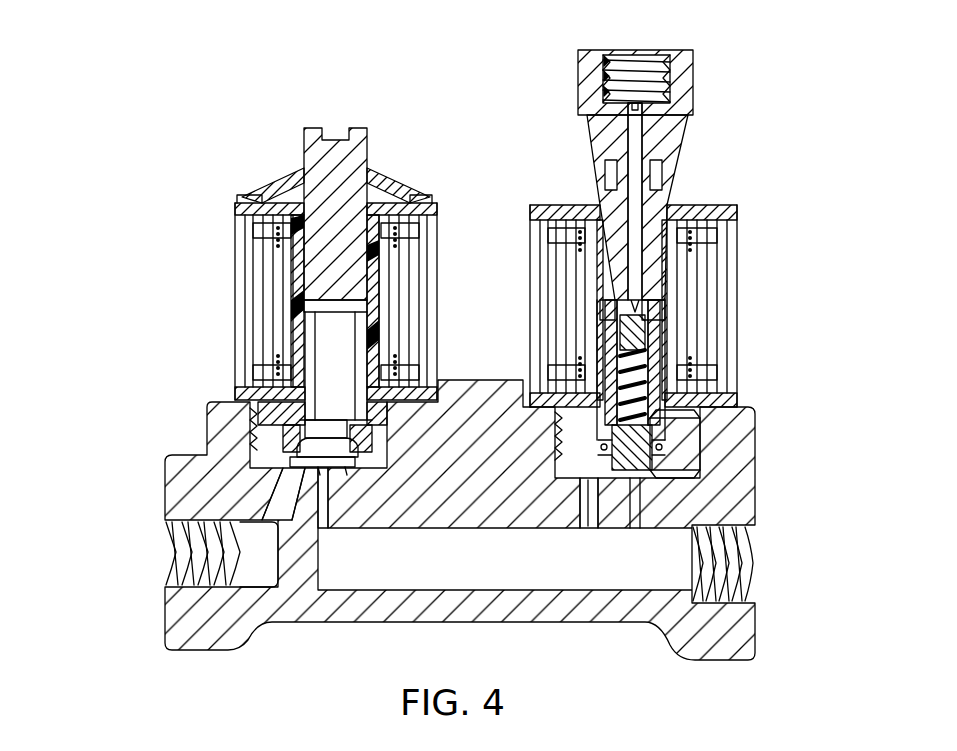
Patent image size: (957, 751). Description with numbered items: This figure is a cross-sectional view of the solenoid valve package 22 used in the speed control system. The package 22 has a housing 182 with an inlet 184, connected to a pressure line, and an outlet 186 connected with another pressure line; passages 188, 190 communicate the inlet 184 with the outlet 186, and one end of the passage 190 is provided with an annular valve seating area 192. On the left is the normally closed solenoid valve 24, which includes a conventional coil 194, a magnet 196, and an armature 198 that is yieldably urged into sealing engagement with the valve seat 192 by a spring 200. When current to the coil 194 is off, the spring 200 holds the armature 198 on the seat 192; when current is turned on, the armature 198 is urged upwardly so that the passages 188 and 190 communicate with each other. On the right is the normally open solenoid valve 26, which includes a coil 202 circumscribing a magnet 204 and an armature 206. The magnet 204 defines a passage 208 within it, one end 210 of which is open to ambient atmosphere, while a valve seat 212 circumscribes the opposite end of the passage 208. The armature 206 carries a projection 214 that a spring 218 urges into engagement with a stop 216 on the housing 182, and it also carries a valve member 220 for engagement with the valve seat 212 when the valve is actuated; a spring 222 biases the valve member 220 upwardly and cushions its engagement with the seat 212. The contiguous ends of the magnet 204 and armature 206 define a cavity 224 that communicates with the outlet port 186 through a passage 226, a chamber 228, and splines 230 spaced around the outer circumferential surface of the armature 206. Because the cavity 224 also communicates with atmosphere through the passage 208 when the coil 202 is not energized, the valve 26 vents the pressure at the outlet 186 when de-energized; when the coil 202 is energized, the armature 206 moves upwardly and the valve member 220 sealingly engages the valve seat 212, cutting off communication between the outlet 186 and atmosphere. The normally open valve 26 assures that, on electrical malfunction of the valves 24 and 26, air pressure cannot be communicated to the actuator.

The valve package 22 is at (487, 185).
The normally closed solenoid valve 24 is at (412, 152).
The normally open solenoid valve 26 is at (716, 75).
The housing 182 is at (348, 622).
The inlet 184 is at (180, 600).
The outlet 186 is at (690, 653).
The passage 188 is at (282, 494).
The passage 190 is at (333, 512).
The annular valve seating area 192 is at (340, 460).
The coil 194 is at (290, 250).
The magnet 196 is at (325, 160).
The armature 198 is at (350, 350).
The spring 200 is at (300, 440).
The coil 202 is at (700, 250).
The magnet 204 is at (660, 198).
The armature 206 is at (605, 352).
The passage 208 is at (634, 202).
The end of passage 210 is at (640, 100).
The valve seat 212 is at (665, 302).
The projection 214 is at (650, 450).
The stop 216 is at (636, 505).
The spring 218 is at (690, 442).
The valve member 220 is at (583, 290).
The spring 222 is at (645, 365).
The cavity 224 is at (607, 315).
The passage 226 is at (588, 520).
The chamber 228 is at (676, 470).
The splines 230 is at (660, 380).